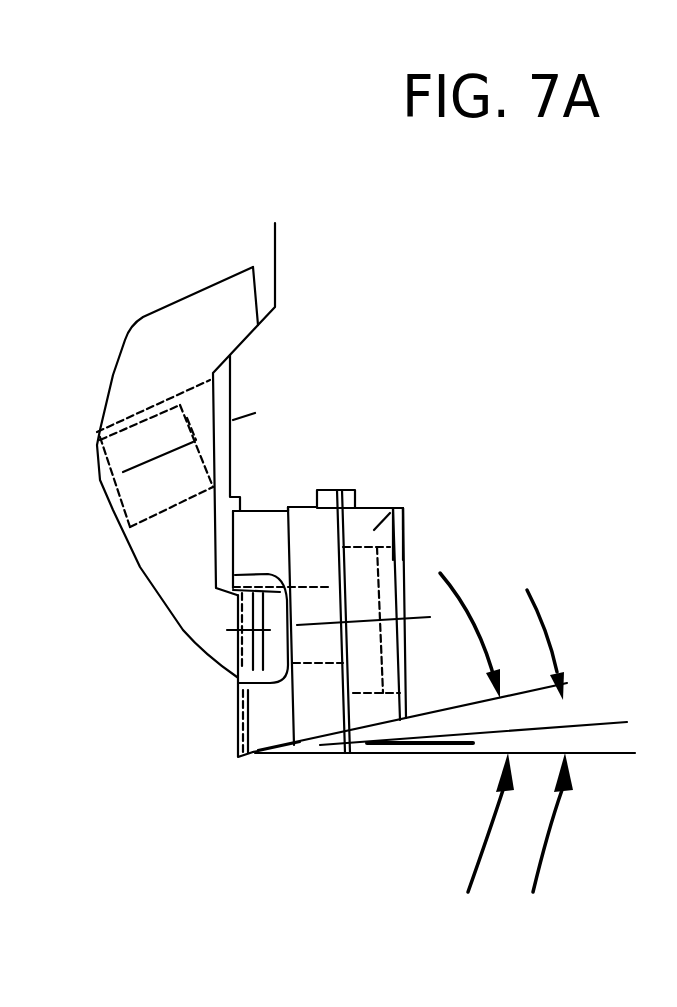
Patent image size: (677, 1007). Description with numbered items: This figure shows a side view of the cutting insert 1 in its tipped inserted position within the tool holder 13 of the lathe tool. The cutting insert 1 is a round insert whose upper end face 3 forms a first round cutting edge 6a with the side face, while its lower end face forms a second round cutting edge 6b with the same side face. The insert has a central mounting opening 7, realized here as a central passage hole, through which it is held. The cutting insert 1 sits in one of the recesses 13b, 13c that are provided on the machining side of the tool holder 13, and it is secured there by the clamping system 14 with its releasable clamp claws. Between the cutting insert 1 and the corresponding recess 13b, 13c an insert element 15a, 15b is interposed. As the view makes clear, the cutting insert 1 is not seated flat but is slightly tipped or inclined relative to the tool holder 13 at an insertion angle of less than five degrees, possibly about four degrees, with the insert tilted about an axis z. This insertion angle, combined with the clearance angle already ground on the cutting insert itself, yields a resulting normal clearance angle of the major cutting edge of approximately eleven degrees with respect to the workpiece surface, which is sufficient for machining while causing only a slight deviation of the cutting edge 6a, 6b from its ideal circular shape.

The cutting insert 1 is at (307, 528).
The upper end face 3 is at (242, 722).
The first round cutting edge 6a is at (252, 753).
The second round cutting edge 6b is at (353, 502).
The central mounting opening 7 is at (237, 677).
The tool holder 13 is at (305, 257).
The recess 13b is at (458, 470).
The recess 13c is at (363, 502).
The clamping system 14 is at (140, 375).
The insert element 15a is at (453, 519).
The insert element 15b is at (374, 530).
The pivot axis z is at (278, 514).